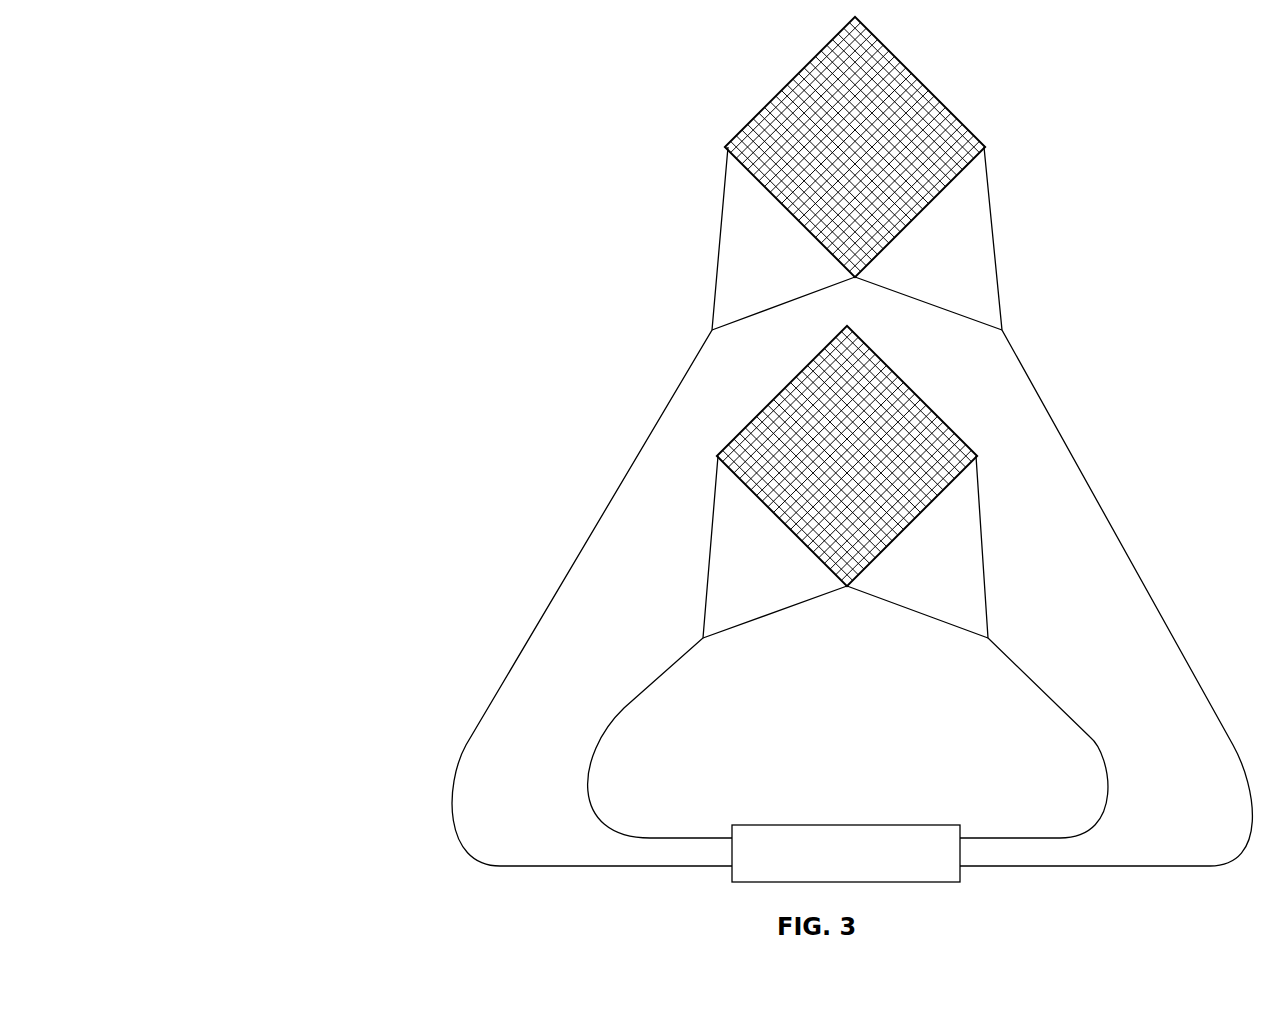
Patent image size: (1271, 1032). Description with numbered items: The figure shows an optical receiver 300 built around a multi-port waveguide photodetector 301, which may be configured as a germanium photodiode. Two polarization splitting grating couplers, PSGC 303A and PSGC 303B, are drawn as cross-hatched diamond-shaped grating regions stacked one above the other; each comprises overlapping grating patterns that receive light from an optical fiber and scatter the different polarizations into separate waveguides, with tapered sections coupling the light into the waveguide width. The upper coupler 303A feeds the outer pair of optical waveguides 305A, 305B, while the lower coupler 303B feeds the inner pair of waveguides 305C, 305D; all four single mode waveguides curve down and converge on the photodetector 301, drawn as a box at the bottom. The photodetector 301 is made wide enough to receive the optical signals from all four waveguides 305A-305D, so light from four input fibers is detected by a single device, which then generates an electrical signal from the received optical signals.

The optical receiver 300 is at (353, 130).
The multi-port waveguide photodetector 301 is at (846, 853).
The PSGC 303A is at (985, 152).
The PSGC 303B is at (977, 457).
The optical waveguide 305A is at (594, 534).
The optical waveguide 305B is at (1077, 465).
The optical waveguide 305C is at (623, 710).
The optical waveguide 305D is at (1077, 718).